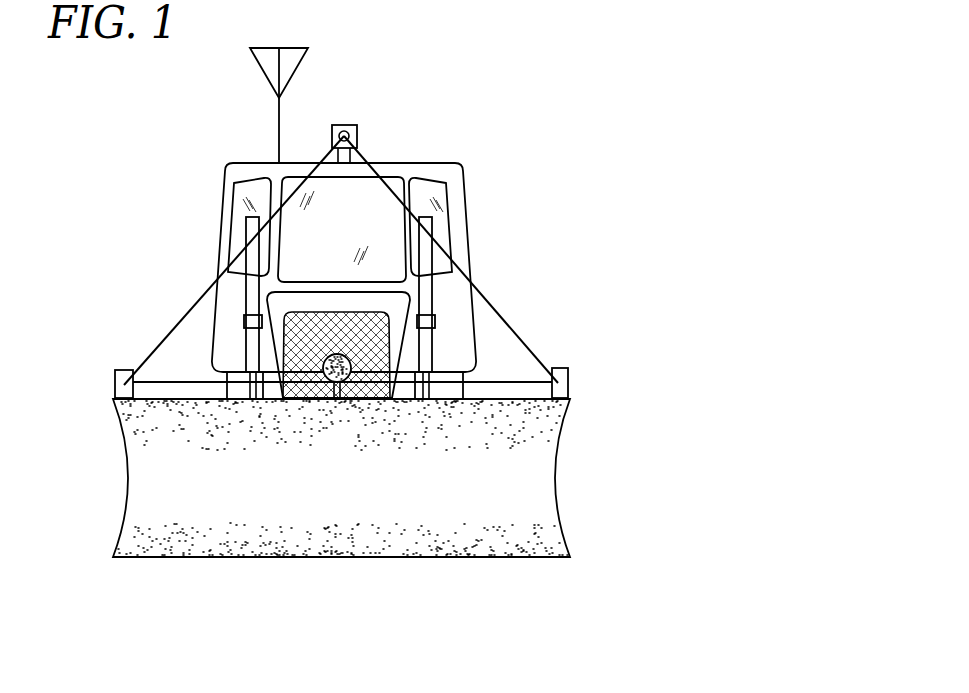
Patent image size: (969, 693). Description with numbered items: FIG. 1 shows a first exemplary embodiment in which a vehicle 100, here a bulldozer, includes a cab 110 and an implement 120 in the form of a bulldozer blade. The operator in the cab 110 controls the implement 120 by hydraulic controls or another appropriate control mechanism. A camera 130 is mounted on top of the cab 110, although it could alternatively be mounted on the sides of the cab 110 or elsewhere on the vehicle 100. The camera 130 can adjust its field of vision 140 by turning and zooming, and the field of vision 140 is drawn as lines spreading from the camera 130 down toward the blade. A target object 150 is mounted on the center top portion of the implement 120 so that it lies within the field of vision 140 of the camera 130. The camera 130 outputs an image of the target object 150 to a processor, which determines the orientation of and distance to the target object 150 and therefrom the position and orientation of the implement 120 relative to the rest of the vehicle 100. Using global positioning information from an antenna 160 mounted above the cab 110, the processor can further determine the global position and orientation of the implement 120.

The vehicle 100 is at (495, 88).
The cab 110 is at (468, 223).
The implement 120 is at (546, 479).
The camera 130 is at (343, 124).
The field of vision 140 is at (180, 322).
The target object 150 is at (350, 362).
The antenna 160 is at (257, 60).